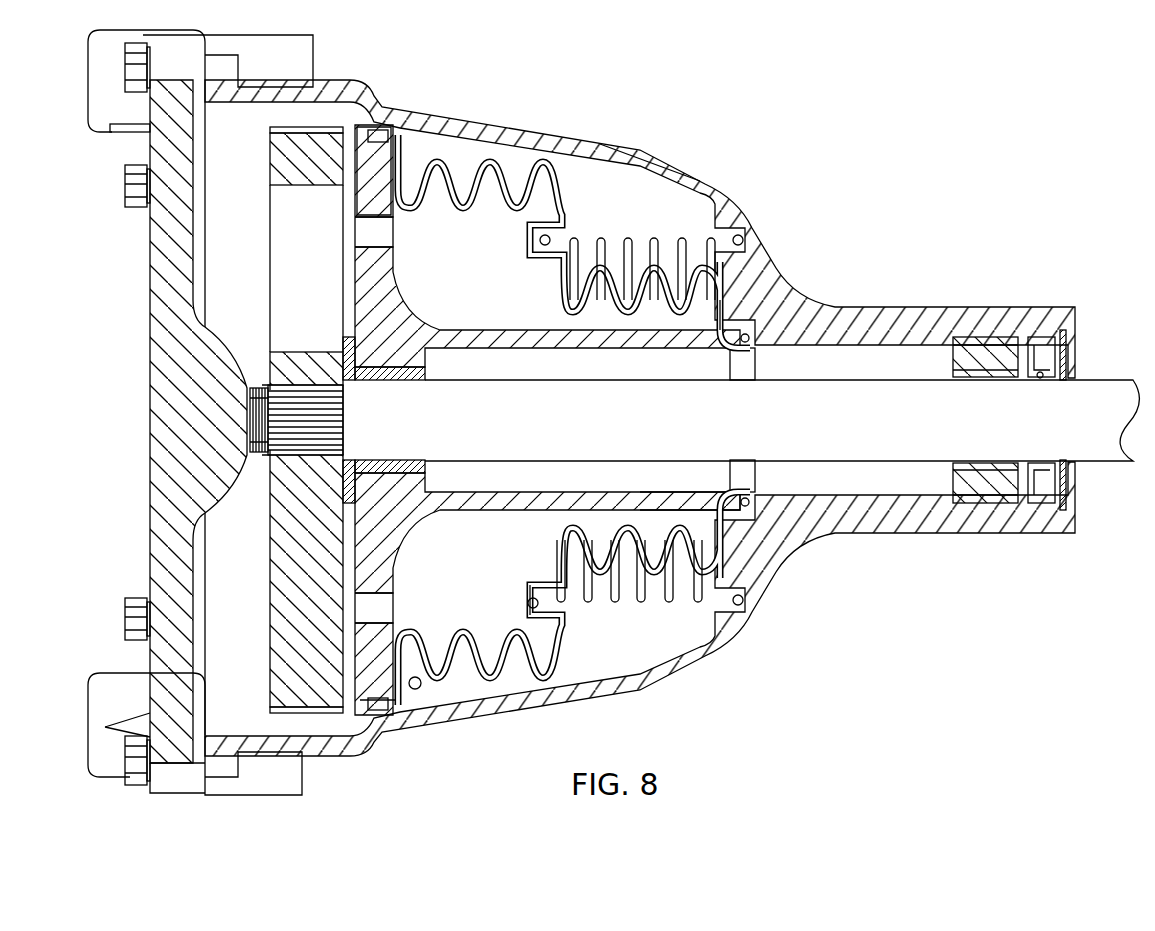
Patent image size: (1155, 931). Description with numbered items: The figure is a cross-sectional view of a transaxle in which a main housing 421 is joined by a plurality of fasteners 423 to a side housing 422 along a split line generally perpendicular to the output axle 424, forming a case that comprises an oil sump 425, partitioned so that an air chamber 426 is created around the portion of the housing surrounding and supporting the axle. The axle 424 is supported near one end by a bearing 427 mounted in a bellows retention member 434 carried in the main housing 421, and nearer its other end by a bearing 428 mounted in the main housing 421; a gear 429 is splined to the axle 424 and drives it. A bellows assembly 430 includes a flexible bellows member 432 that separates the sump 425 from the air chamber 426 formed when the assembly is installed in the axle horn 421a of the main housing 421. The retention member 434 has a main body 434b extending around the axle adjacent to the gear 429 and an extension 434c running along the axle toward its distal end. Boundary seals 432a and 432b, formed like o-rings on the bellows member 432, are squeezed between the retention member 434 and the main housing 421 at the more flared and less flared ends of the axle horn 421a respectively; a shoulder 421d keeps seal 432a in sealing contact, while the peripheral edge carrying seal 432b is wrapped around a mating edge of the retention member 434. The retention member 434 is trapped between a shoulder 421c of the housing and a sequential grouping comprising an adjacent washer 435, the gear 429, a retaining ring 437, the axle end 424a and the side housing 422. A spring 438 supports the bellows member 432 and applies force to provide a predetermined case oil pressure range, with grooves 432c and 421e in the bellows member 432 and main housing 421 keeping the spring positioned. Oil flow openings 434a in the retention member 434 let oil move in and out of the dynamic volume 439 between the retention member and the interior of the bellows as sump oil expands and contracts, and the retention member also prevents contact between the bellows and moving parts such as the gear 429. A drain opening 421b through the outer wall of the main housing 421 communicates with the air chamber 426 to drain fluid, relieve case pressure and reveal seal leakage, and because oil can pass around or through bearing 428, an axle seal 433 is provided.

The main housing 421 is at (243, 103).
The axle horn 421a is at (674, 169).
The drain opening 421b is at (424, 689).
The shoulder 421c is at (385, 705).
The shoulder 421d is at (382, 692).
The channel or groove 421e is at (720, 230).
The side housing 422 is at (177, 216).
The fasteners 423 is at (125, 184).
The output axle 424 is at (698, 430).
The axle end 424a is at (260, 462).
The oil sump 425 is at (256, 723).
The air chamber 426 is at (618, 648).
The bearing 427 is at (379, 381).
The bearing 428 is at (982, 342).
The gear 429 is at (298, 590).
The bellows assembly 430 is at (672, 110).
The bellows member 432 is at (563, 188).
The boundary seal 432a is at (386, 138).
The boundary seal 432b is at (743, 300).
The channel or groove 432c is at (538, 600).
The axle seal 433 is at (1047, 335).
The bellows retention member 434 is at (426, 330).
The oil flow openings 434a is at (380, 232).
The main body 434b is at (366, 160).
The extension 434c is at (719, 500).
The washer 435 is at (344, 354).
The retaining ring 437 is at (263, 382).
The spring 438 is at (643, 604).
The dynamic volume 439 is at (488, 280).